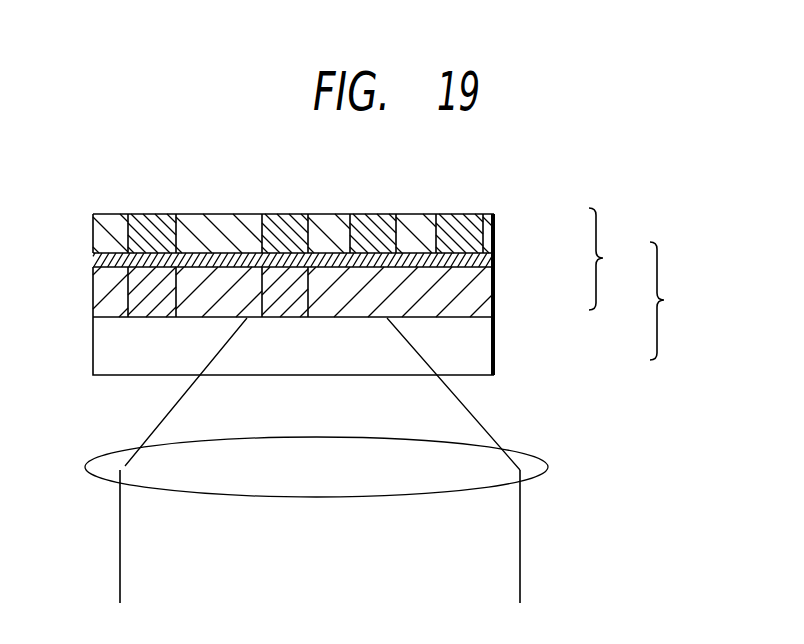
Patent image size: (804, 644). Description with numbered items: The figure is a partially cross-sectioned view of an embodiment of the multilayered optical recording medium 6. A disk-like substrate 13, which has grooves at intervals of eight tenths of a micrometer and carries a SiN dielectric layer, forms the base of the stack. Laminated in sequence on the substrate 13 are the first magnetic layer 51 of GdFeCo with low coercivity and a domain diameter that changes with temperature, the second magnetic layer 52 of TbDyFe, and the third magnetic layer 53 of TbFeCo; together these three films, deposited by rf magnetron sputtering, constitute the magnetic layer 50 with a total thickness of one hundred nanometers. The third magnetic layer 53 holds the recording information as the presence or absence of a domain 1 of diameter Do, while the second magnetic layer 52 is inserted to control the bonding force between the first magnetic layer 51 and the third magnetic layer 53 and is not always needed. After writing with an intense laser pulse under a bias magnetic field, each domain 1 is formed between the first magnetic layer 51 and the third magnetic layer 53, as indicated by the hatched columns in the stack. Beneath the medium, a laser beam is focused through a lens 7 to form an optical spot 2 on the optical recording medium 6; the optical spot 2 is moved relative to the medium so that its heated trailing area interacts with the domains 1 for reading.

The domain 1 is at (153, 214).
The optical spot 2 is at (472, 412).
The optical recording medium 6 is at (671, 301).
The lens 7 is at (548, 465).
The substrate 13 is at (497, 338).
The magnetic layer 50 is at (615, 259).
The first magnetic layer 51 is at (497, 290).
The second magnetic layer 52 is at (497, 258).
The third magnetic layer 53 is at (497, 226).